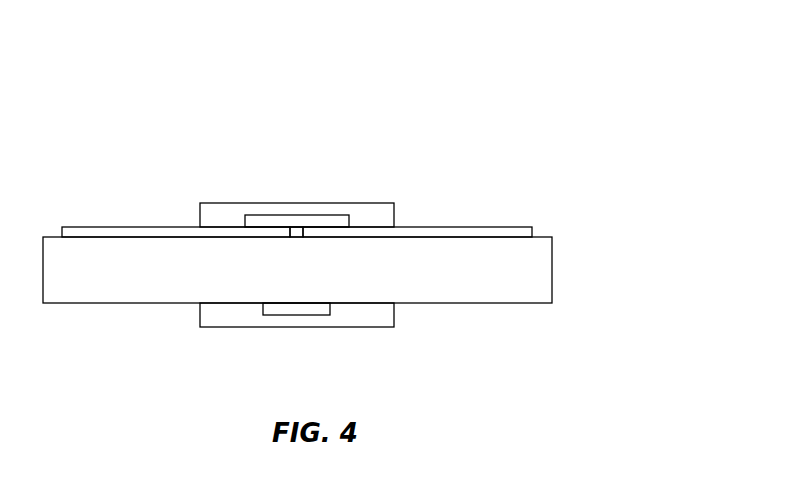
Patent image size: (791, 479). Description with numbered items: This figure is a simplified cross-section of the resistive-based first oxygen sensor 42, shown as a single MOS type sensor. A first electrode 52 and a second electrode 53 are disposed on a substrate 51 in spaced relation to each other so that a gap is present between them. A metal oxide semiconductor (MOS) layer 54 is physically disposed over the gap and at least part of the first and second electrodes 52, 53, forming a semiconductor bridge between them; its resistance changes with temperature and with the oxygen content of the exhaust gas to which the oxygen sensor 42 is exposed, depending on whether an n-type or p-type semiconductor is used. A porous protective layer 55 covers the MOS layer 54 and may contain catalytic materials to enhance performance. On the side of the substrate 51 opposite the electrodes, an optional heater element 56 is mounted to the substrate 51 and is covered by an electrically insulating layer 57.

The first oxygen sensor 42 is at (408, 112).
The substrate 51 is at (553, 260).
The first electrode 52 is at (462, 233).
The second electrode 53 is at (100, 233).
The metal oxide semiconductor (MOS) layer 54 is at (312, 222).
The porous protective layer 55 is at (368, 213).
The heater element 56 is at (305, 307).
The electrically insulating layer 57 is at (200, 318).